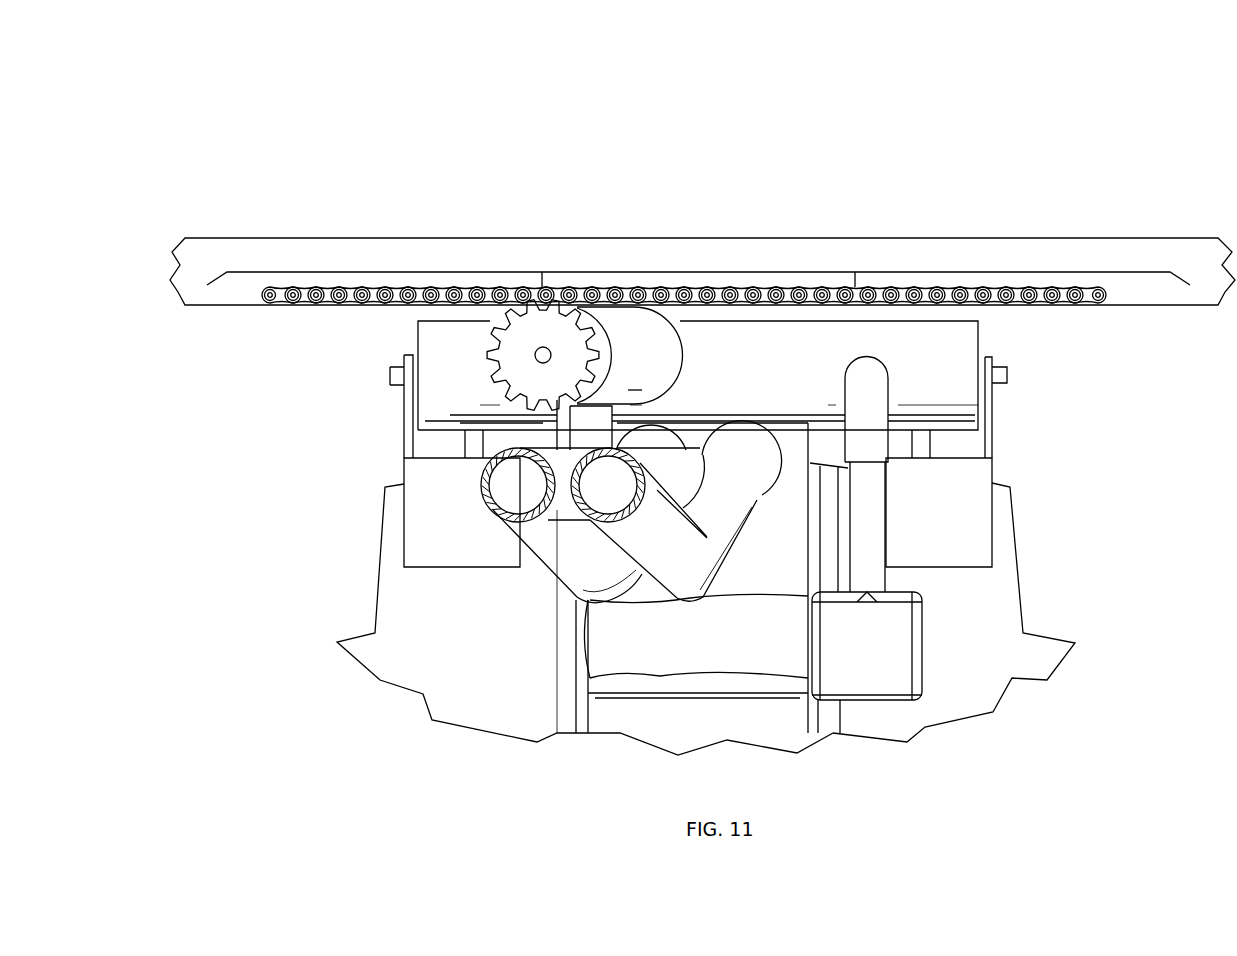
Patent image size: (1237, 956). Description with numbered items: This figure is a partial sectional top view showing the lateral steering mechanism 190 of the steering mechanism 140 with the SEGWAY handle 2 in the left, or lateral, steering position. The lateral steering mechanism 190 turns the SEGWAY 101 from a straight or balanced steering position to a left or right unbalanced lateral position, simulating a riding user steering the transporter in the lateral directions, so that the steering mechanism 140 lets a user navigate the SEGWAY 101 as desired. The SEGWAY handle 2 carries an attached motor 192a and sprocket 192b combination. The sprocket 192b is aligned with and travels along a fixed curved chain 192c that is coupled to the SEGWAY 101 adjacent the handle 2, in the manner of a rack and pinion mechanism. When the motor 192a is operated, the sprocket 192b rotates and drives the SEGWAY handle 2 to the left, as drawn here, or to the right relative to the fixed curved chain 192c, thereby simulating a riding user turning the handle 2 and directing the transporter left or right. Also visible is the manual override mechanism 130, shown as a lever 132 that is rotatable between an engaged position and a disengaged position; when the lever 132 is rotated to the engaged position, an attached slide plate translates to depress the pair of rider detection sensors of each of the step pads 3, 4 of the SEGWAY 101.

The steering mechanism 140 is at (613, 150).
The lateral steering mechanism 190 is at (628, 185).
The motor 192a is at (643, 328).
The sprocket 192b is at (538, 330).
The fixed curved chain 192c is at (440, 288).
The manual override mechanism 130 is at (913, 378).
The lever 132 is at (870, 535).
The SEGWAY handle 2 is at (562, 543).
The step pad 3 is at (938, 705).
The step pad 4 is at (496, 700).
The SEGWAY 101 is at (738, 613).